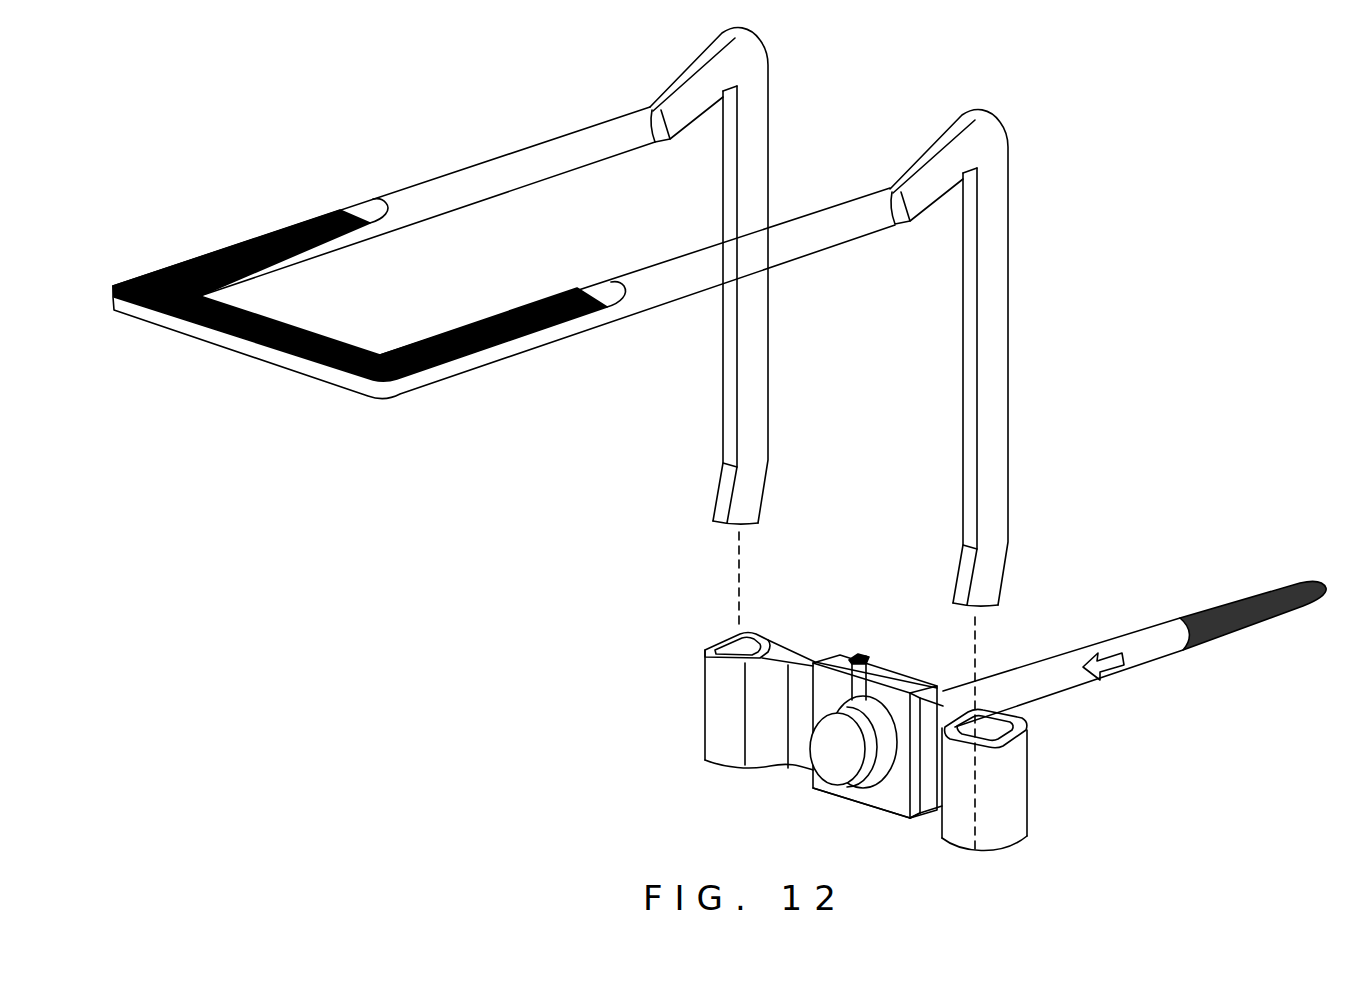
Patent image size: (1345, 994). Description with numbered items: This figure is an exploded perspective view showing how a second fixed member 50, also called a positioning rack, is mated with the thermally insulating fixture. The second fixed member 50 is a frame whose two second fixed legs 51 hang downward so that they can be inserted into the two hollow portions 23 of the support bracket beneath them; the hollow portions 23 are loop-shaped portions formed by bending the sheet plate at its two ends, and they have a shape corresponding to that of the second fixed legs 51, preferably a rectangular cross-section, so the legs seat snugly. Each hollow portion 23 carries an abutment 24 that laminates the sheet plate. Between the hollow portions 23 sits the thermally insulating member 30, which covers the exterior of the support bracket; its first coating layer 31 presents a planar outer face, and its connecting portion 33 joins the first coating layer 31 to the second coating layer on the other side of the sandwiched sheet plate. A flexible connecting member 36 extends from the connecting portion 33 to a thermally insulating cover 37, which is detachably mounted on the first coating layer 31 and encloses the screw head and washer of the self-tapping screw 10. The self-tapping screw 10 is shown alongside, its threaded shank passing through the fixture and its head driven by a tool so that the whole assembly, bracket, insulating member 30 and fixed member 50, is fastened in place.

The self-tapping screw 10 is at (1140, 643).
The hollow portions 23 is at (762, 657).
The abutment 24 is at (817, 660).
The thermally insulating member 30 is at (833, 800).
The first coating layer 31 is at (888, 802).
The connecting portion 33 is at (910, 683).
The connecting member 36 is at (865, 670).
The thermally insulating cover 37 is at (837, 758).
The second fixed member 50 is at (275, 353).
The second fixed legs 51 is at (730, 398).